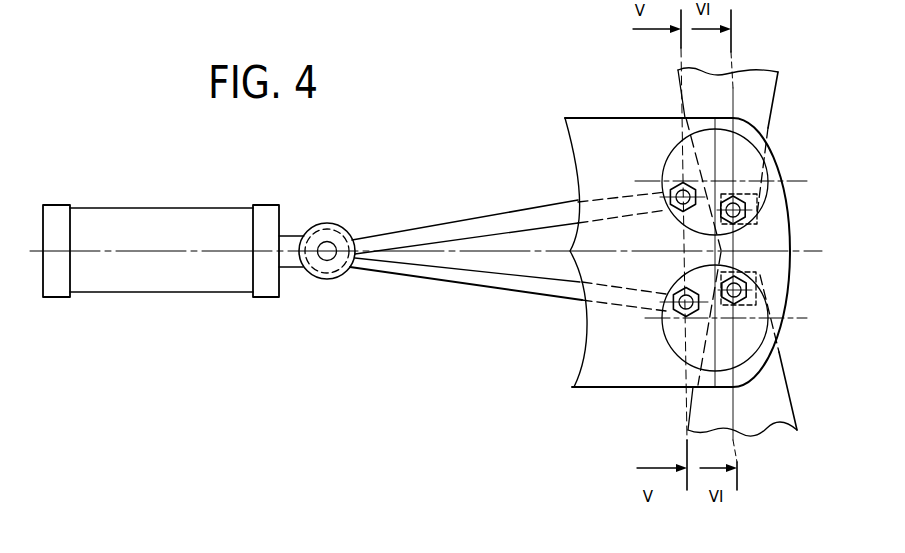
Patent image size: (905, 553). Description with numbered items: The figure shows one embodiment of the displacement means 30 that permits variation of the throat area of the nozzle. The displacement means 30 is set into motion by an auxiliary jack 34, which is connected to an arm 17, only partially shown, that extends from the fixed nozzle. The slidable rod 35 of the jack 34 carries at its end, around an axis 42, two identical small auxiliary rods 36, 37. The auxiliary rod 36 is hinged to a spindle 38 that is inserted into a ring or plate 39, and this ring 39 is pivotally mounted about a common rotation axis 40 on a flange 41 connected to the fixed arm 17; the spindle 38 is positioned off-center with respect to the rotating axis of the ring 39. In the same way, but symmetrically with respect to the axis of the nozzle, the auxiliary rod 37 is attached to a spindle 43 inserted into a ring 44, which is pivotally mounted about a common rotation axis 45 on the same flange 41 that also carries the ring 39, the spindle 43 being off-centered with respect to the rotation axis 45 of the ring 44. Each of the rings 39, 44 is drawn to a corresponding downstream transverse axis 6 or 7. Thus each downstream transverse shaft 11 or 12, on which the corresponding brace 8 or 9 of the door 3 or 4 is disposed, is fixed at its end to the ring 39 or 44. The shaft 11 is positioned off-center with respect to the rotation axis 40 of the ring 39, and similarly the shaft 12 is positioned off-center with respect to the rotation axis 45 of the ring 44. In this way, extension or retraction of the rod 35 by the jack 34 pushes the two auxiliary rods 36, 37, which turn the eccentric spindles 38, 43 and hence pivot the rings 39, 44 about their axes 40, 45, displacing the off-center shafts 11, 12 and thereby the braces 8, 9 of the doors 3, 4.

The door 3 is at (752, 80).
The door 4 is at (763, 436).
The downstream transverse axis 6 is at (735, 236).
The downstream transverse axis 7 is at (747, 282).
The brace 8 is at (772, 128).
The brace 9 is at (773, 392).
The downstream transverse shaft 11 is at (742, 203).
The downstream transverse shaft 12 is at (756, 302).
The arm 17 is at (573, 371).
The displacement means 30 is at (372, 216).
The auxiliary jack 34 is at (222, 293).
The slidable rod 35 is at (292, 270).
The auxiliary rod 36 is at (461, 228).
The auxiliary rod 37 is at (465, 277).
The spindle 38 is at (671, 190).
The ring 39 is at (682, 157).
The common rotation axis 40 is at (715, 181).
The flange 41 is at (632, 188).
The axis 42 is at (331, 260).
The spindle 43 is at (677, 311).
The ring 44 is at (693, 347).
The common rotation axis 45 is at (717, 318).